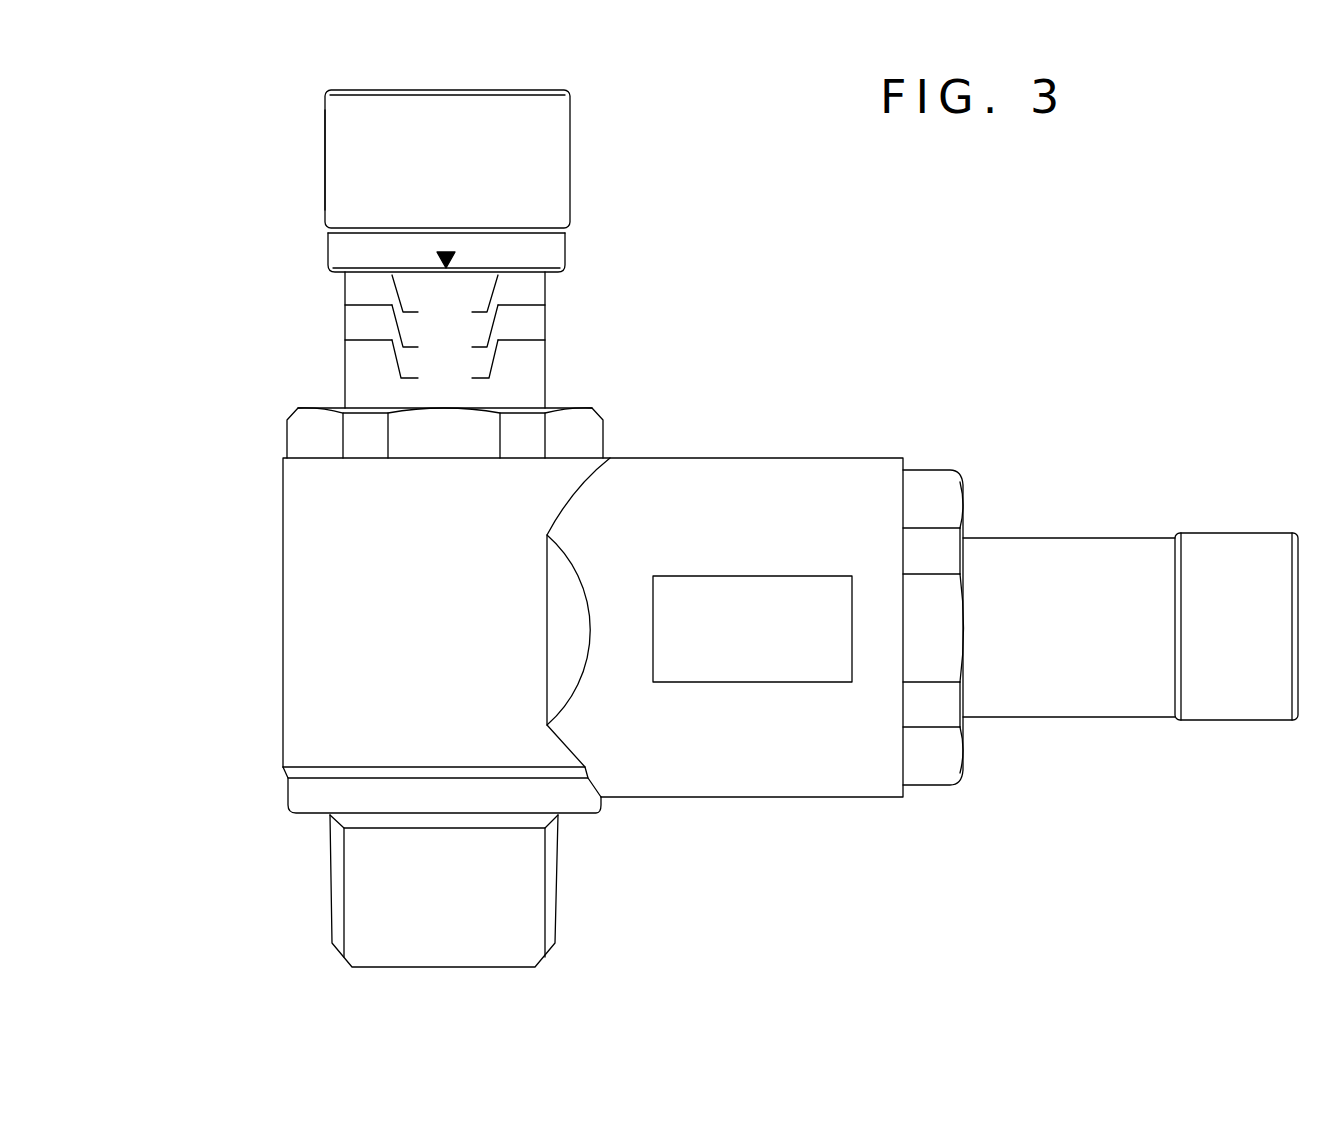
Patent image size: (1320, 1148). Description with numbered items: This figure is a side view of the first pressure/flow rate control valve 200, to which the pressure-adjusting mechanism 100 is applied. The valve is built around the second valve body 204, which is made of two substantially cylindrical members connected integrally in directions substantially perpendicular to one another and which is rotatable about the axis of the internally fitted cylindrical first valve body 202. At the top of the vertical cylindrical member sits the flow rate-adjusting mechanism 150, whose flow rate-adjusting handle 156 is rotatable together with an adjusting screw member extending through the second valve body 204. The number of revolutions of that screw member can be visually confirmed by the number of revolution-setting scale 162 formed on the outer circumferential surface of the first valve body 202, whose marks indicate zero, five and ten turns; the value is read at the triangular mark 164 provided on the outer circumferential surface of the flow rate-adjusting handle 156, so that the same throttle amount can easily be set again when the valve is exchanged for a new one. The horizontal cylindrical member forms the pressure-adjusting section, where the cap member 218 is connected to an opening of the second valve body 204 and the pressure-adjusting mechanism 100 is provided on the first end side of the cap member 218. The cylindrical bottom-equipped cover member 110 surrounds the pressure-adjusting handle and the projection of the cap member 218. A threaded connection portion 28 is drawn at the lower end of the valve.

The threaded connection portion 28 is at (555, 893).
The pressure-adjusting mechanism 100 is at (1228, 530).
The cover member 110 is at (1140, 703).
The flow rate-adjusting mechanism 150 is at (570, 175).
The flow rate-adjusting handle 156 is at (340, 167).
The number of revolution-setting scale 162 is at (535, 327).
The triangular mark 164 is at (444, 252).
The first pressure/flow rate control valve 200 is at (856, 253).
The first valve body 202 is at (352, 368).
The second valve body 204 is at (300, 672).
The cap member 218 is at (956, 775).